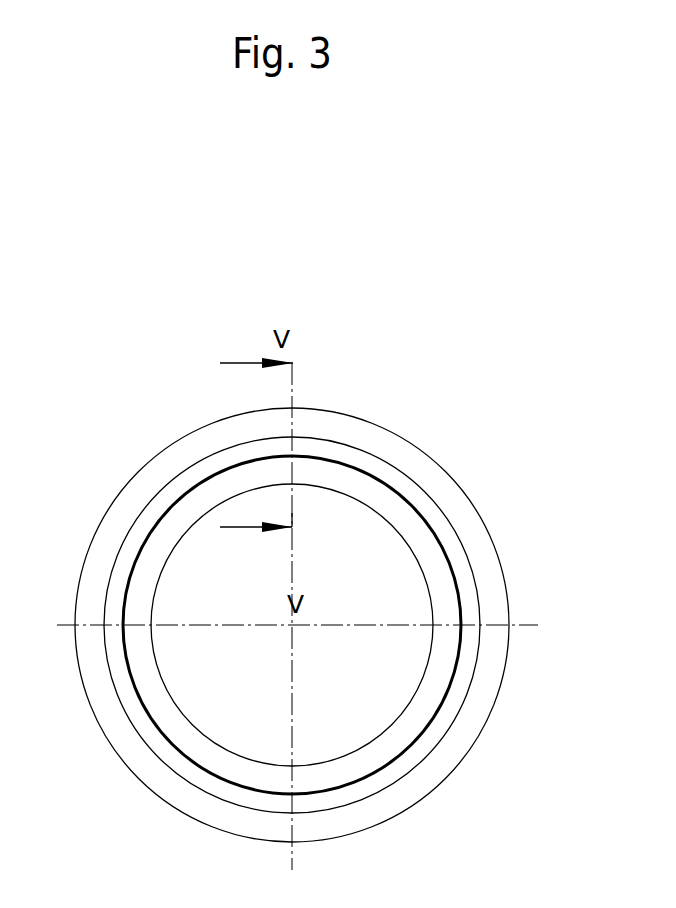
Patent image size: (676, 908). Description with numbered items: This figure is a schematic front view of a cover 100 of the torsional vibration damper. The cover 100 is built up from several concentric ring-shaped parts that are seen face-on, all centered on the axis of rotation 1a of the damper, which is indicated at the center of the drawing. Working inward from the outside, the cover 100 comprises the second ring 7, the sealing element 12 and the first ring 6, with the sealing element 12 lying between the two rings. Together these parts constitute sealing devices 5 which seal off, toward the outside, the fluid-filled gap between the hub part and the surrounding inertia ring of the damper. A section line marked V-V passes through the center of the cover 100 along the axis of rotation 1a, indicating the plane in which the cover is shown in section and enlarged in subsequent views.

The cover 100 is at (362, 265).
The sealing devices 5 is at (503, 468).
The second ring 7 is at (368, 438).
The sealing element 12 is at (403, 488).
The first ring 6 is at (432, 567).
The axis of rotation 1a is at (292, 625).